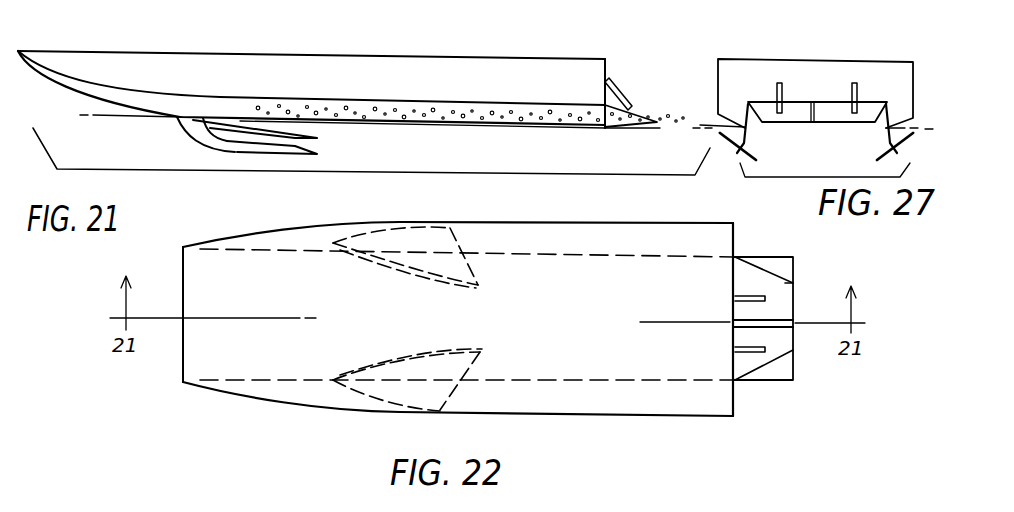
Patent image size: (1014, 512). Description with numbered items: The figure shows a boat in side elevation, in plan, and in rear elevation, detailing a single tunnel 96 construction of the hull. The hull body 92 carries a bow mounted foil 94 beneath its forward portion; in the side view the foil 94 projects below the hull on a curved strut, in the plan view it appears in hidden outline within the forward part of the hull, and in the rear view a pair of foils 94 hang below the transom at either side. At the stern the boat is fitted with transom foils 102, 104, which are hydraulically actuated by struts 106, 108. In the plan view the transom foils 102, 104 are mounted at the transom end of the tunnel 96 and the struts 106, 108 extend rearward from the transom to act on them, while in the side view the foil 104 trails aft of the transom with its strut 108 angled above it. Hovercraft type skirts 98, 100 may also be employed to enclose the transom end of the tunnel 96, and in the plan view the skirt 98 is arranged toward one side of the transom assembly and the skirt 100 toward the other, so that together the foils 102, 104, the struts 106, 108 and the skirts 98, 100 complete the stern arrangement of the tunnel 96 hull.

In FIG. 21, the boat hull 92 is at (302, 60).
In FIG. 21, the bow mounted foils 94 is at (208, 152).
In FIG. 27, the bow mounted foils 94 is at (872, 145).
In FIG. 22, the bow mounted foils 94 is at (445, 240).
In FIG. 22, the single tunnel 96 is at (690, 365).
In FIG. 22, the hovercraft type skirt 98 is at (787, 258).
In FIG. 22, the hovercraft type skirt 100 is at (782, 368).
In FIG. 22, the transom foil 102 is at (785, 287).
In FIG. 21, the transom foil 104 is at (676, 126).
In FIG. 27, the transom foil 104 is at (838, 113).
In FIG. 22, the transom foil 104 is at (782, 345).
In FIG. 22, the strut 106 is at (750, 293).
In FIG. 21, the strut 108 is at (609, 82).
In FIG. 27, the strut 108 is at (785, 90).
In FIG. 22, the strut 108 is at (752, 355).